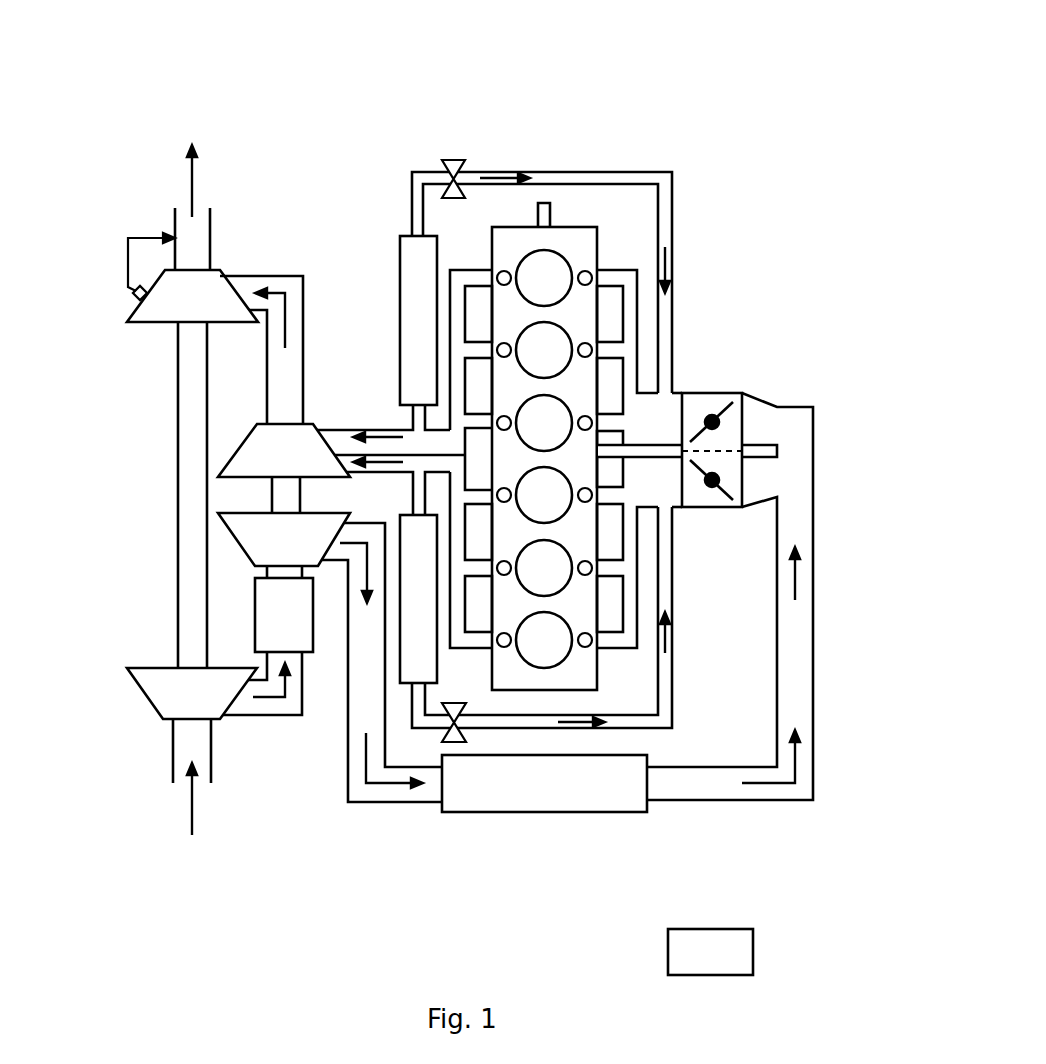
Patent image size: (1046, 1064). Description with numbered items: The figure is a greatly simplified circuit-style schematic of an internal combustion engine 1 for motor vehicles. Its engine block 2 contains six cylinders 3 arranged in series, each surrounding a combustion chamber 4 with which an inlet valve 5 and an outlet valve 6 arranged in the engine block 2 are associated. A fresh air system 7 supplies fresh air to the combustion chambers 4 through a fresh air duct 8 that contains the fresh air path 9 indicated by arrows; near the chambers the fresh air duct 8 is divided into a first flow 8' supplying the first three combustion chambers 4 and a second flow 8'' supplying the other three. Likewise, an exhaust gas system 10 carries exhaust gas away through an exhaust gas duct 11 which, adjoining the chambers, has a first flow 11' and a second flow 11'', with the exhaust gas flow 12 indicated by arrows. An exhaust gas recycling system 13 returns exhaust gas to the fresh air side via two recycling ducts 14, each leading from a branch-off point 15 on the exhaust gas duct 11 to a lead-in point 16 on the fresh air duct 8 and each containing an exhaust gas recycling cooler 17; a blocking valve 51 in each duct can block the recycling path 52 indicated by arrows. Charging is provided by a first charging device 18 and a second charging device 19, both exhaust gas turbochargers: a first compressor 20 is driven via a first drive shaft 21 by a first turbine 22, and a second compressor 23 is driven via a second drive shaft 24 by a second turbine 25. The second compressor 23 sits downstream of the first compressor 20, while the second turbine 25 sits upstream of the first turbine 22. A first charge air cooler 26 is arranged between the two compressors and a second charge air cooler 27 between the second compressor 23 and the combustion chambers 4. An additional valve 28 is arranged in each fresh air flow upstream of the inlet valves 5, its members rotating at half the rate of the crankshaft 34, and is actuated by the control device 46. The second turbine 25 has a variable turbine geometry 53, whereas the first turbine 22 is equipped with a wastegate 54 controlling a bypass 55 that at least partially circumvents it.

The internal combustion engine 1 is at (715, 140).
The engine block 2 is at (567, 222).
The cylinder 3 is at (570, 250).
The combustion chamber 4 is at (544, 459).
The inlet valve 5 is at (592, 421).
The outlet valve 6 is at (501, 417).
The fresh air system 7 is at (768, 803).
The fresh air duct 8 is at (722, 842).
The first flow 8' is at (730, 566).
The second flow 8'' is at (712, 627).
The fresh air path 9 is at (362, 568).
The exhaust gas system 10 is at (262, 264).
The exhaust gas duct 11 is at (300, 347).
The first flow 11' is at (330, 390).
The second flow 11'' is at (372, 495).
The exhaust gas flow 12 is at (193, 172).
The exhaust gas recycling system 13 is at (659, 735).
The recycling duct 14 is at (628, 172).
The branch-off point 15 is at (418, 468).
The lead-in point 16 is at (664, 392).
The exhaust gas recycling cooler 17 is at (418, 459).
The first charging device 18 is at (142, 702).
The second charging device 19 is at (239, 548).
The first compressor 20 is at (192, 693).
The first drive shaft 21 is at (180, 495).
The first turbine 22 is at (192, 265).
The second compressor 23 is at (284, 539).
The second drive shaft 24 is at (282, 500).
The second turbine 25 is at (284, 450).
The first charge air cooler 26 is at (268, 640).
The second charge air cooler 27 is at (544, 783).
The additional valve 28 is at (712, 397).
The crankshaft 34 is at (541, 203).
The control device 46 is at (710, 952).
The blocking valve 51 is at (453, 160).
The recycling path 52 is at (497, 176).
The variable turbine geometry 53 is at (252, 437).
The wastegate 54 is at (133, 299).
The bypass 55 is at (145, 238).